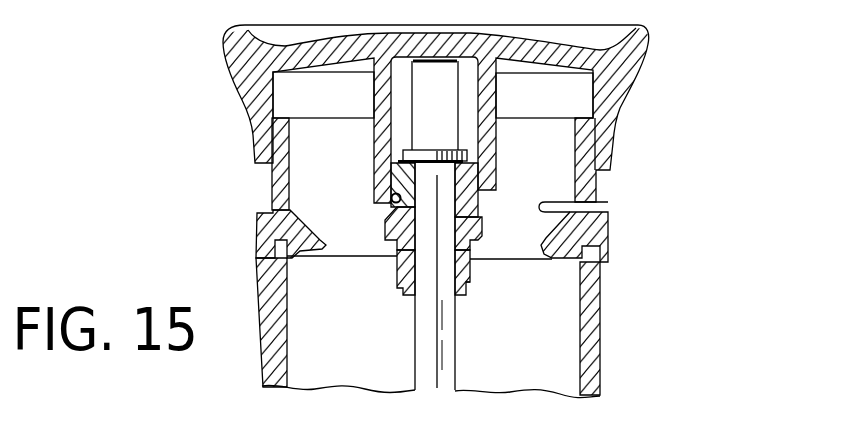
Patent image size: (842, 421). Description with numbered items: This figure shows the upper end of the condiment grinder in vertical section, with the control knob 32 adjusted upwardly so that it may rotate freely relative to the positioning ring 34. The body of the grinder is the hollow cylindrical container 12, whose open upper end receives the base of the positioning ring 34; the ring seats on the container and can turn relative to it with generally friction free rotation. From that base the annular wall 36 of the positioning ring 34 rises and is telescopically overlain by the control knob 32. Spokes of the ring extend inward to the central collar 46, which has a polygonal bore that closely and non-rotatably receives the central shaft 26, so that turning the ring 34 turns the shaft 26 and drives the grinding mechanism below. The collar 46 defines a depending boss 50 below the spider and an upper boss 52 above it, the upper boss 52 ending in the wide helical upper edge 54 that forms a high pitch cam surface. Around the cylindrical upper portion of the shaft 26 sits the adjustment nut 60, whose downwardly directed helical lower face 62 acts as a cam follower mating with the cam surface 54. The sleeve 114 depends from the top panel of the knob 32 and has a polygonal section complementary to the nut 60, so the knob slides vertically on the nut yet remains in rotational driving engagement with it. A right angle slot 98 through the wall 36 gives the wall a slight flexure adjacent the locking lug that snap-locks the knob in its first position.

The container 12 is at (612, 348).
The central shaft 26 is at (457, 356).
The control knob 32 is at (620, 106).
The positioning ring 34 is at (620, 244).
The annular wall 36 is at (342, 135).
The central collar 46 is at (478, 285).
The depending boss 50 is at (393, 278).
The upper boss 52 is at (396, 222).
The helical upper edge 54 is at (392, 199).
The adjustment nut 60 is at (481, 200).
The helical lower face 62 is at (483, 222).
The right angle slot 98 is at (597, 209).
The sleeve 114 is at (507, 99).